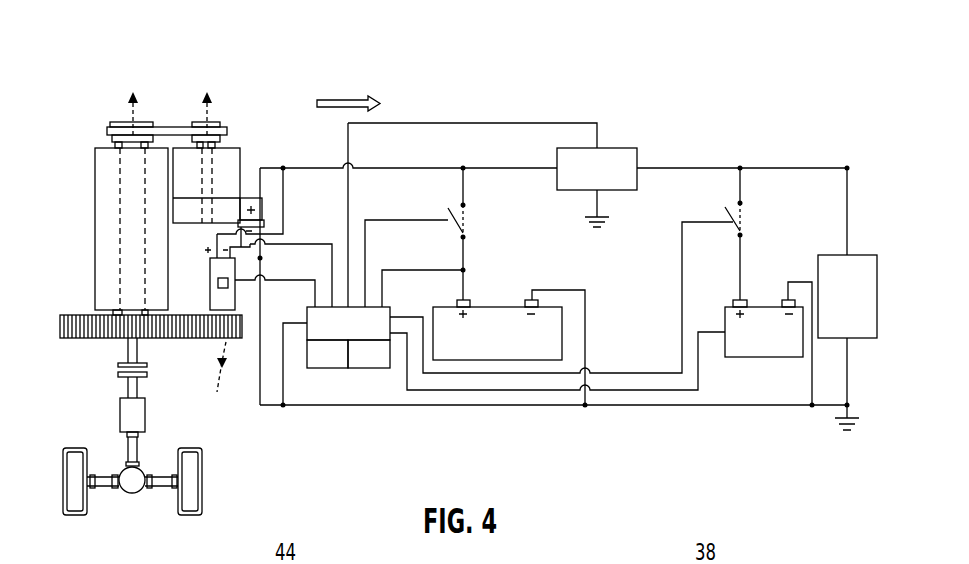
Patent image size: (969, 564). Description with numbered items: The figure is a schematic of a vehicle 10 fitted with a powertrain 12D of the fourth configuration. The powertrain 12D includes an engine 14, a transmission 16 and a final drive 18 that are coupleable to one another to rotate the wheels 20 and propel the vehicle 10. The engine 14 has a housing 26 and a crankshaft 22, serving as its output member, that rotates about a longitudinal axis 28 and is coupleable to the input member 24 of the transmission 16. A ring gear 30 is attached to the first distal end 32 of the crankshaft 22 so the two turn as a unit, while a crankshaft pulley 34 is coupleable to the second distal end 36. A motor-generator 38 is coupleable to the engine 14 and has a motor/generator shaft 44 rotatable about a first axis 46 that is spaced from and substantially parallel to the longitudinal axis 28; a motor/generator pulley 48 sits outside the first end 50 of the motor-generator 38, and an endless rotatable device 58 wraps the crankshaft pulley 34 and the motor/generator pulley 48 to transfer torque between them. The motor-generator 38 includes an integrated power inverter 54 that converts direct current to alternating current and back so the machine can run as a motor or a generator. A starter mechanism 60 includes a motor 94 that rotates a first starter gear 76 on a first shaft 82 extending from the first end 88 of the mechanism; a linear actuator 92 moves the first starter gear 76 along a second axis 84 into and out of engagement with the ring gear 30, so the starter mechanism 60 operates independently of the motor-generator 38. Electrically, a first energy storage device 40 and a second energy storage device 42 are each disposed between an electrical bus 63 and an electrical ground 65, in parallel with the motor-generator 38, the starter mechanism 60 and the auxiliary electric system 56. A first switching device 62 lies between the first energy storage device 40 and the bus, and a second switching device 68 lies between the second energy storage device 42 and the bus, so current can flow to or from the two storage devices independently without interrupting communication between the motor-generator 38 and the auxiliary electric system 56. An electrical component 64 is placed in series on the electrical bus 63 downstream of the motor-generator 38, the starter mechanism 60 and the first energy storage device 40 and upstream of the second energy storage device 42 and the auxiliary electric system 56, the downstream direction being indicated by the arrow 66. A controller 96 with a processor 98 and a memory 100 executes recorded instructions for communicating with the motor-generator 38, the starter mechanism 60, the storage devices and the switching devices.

The vehicle 10 is at (176, 40).
The powertrain 12D is at (797, 110).
The engine 14 is at (109, 231).
The transmission 16 is at (147, 415).
The final drive 18 is at (135, 495).
The wheels 20 is at (203, 482).
The crankshaft 22 is at (108, 185).
The input member 24 is at (127, 392).
The housing 26 is at (110, 267).
The longitudinal axis 28 is at (137, 118).
The ring gear 30 is at (151, 354).
The first distal end 32 is at (116, 312).
The crankshaft pulley 34 is at (118, 121).
The second distal end 36 is at (120, 146).
The motor-generator 38 is at (171, 114).
The first energy storage device 40 is at (503, 306).
The second energy storage device 42 is at (760, 358).
The motor/generator shaft 44 is at (206, 185).
The first axis 46 is at (203, 120).
The motor/generator pulley 48 is at (215, 121).
The first end 50 is at (186, 160).
The integrated power inverter 54 is at (244, 203).
The auxiliary electric system 56 is at (858, 254).
The endless rotatable device 58 is at (116, 138).
The starter mechanism 60 is at (248, 325).
The first switching device 62 is at (483, 218).
The electrical bus 63 is at (502, 166).
The electrical component 64 is at (618, 148).
The electrical ground 65 is at (632, 406).
The arrow 66 is at (343, 99).
The second switching device 68 is at (755, 220).
The first starter gear 76 is at (217, 340).
The first shaft 82 is at (213, 269).
The second axis 84 is at (218, 378).
The first end 88 is at (237, 310).
The linear actuator 92 is at (214, 280).
The motor 94 is at (263, 258).
The controller 96 is at (348, 337).
The processor 98 is at (327, 353).
The memory 100 is at (369, 353).